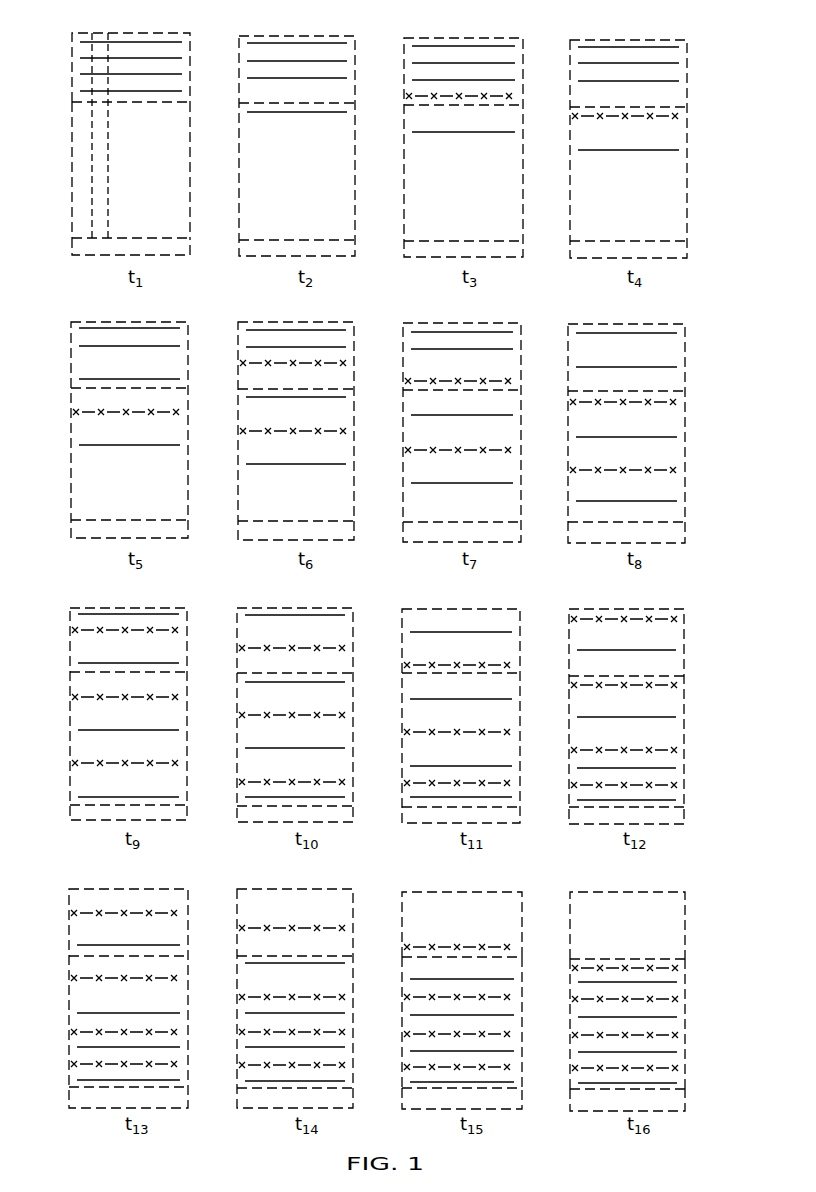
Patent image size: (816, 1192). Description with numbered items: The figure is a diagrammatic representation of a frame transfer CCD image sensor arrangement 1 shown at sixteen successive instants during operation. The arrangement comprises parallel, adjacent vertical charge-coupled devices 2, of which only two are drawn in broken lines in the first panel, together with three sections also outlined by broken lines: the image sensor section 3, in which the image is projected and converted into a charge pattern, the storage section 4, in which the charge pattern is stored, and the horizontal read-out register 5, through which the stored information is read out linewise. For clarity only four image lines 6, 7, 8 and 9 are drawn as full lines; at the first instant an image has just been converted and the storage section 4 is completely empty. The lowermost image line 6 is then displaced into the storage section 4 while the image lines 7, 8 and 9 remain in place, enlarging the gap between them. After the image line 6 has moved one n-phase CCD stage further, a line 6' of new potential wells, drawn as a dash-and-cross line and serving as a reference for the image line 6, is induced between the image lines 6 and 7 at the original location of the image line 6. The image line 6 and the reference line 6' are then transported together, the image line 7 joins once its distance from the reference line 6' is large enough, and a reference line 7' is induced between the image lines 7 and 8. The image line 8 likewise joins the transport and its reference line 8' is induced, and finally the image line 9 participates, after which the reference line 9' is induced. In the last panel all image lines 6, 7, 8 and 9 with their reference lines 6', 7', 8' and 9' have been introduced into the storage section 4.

The CCD image sensor arrangement 1 is at (40, 278).
The vertical charge-coupled devices 2 is at (107, 35).
The image sensor section 3 is at (575, 942).
The storage section 4 is at (575, 1054).
The horizontal read-out register 5 is at (575, 1099).
The image line 6 is at (393, 598).
The image line 7 is at (393, 565).
The image line 8 is at (393, 533).
The image line 9 is at (393, 502).
The reference line 6' is at (393, 587).
The reference line 7' is at (392, 704).
The reference line 8' is at (392, 817).
The reference line 9' is at (392, 790).